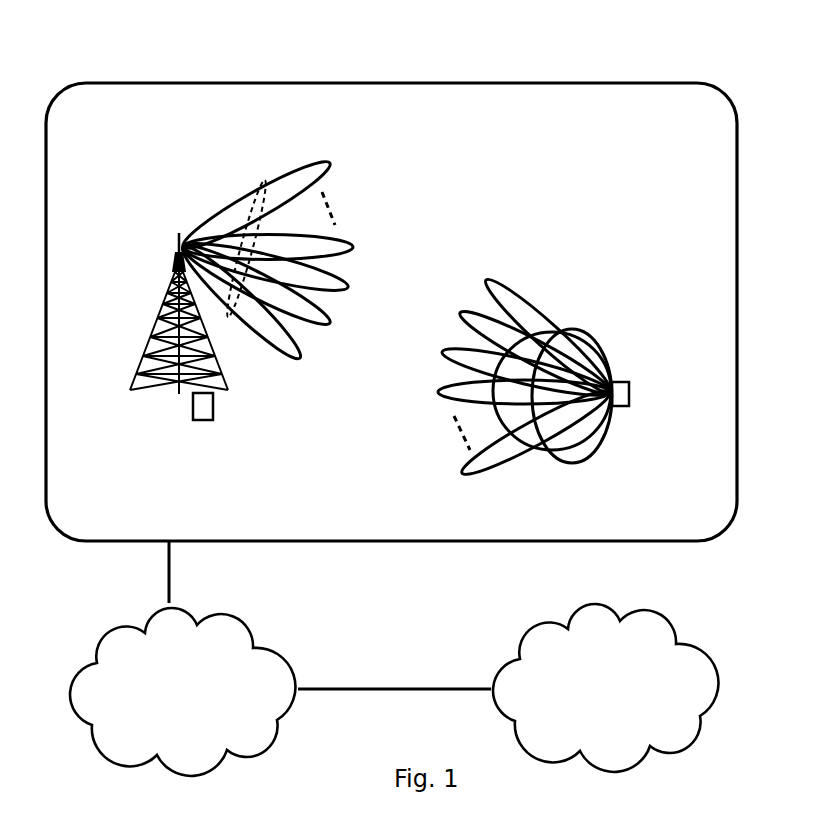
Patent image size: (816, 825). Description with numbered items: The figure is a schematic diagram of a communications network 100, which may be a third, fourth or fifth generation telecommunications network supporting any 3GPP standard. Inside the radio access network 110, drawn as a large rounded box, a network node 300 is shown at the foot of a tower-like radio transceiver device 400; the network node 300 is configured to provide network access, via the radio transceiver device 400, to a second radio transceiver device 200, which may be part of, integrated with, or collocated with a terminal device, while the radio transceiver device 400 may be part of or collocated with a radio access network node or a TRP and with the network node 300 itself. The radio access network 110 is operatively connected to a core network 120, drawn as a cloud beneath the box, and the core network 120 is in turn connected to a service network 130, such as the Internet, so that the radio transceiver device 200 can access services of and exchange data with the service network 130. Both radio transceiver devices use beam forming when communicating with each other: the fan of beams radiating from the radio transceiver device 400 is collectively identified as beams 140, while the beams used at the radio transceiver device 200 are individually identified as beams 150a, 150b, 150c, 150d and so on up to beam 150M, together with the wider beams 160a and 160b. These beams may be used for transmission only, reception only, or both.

The communications network 100 is at (122, 58).
The radio access network 110 is at (120, 124).
The core network 120 is at (210, 710).
The service network 130 is at (634, 707).
The beams 140 is at (266, 183).
The beam 150a is at (486, 281).
The beam 150b is at (460, 313).
The beam 150c is at (443, 352).
The beam 150d is at (438, 392).
The beam 150M is at (462, 473).
The beam 160a is at (572, 332).
The beam 160b is at (578, 462).
The radio transceiver device 200 is at (629, 392).
The network node 300 is at (193, 410).
The radio transceiver device 400 is at (179, 247).